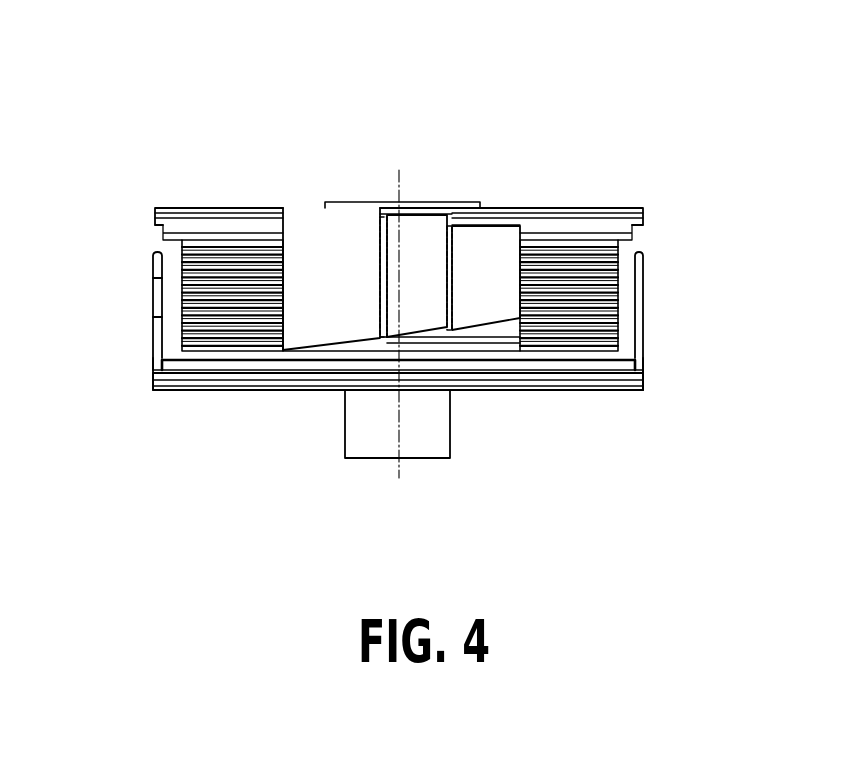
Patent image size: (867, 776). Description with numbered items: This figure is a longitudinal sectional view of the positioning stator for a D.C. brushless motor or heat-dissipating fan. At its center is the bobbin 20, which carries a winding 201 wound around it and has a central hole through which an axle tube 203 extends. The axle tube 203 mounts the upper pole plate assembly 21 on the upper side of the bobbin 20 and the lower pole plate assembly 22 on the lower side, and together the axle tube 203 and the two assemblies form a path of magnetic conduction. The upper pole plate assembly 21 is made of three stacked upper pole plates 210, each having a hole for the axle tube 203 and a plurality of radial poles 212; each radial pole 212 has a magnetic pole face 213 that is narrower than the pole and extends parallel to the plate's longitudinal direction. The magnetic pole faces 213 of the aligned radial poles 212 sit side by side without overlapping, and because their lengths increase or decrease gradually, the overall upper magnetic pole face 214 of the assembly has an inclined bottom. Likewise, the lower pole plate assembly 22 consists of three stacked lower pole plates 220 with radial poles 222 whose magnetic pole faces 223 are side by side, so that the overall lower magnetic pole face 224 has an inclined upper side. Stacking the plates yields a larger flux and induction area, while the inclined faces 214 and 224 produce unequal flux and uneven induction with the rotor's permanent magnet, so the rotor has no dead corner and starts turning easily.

The bobbin 20 is at (540, 362).
The winding 201 is at (588, 320).
The axle tube 203 is at (420, 443).
The upper pole plate assembly 21 is at (560, 178).
The upper pole plate 210 is at (609, 208).
The radial pole 212 is at (288, 208).
The magnetic pole face 213 is at (305, 250).
The overall upper magnetic pole face 214 is at (300, 282).
The lower pole plate assembly 22 is at (304, 415).
The lower pole plate 220 is at (228, 390).
The radial pole 222 is at (153, 390).
The magnetic pole face 223 is at (153, 297).
The overall lower magnetic pole face 224 is at (125, 345).